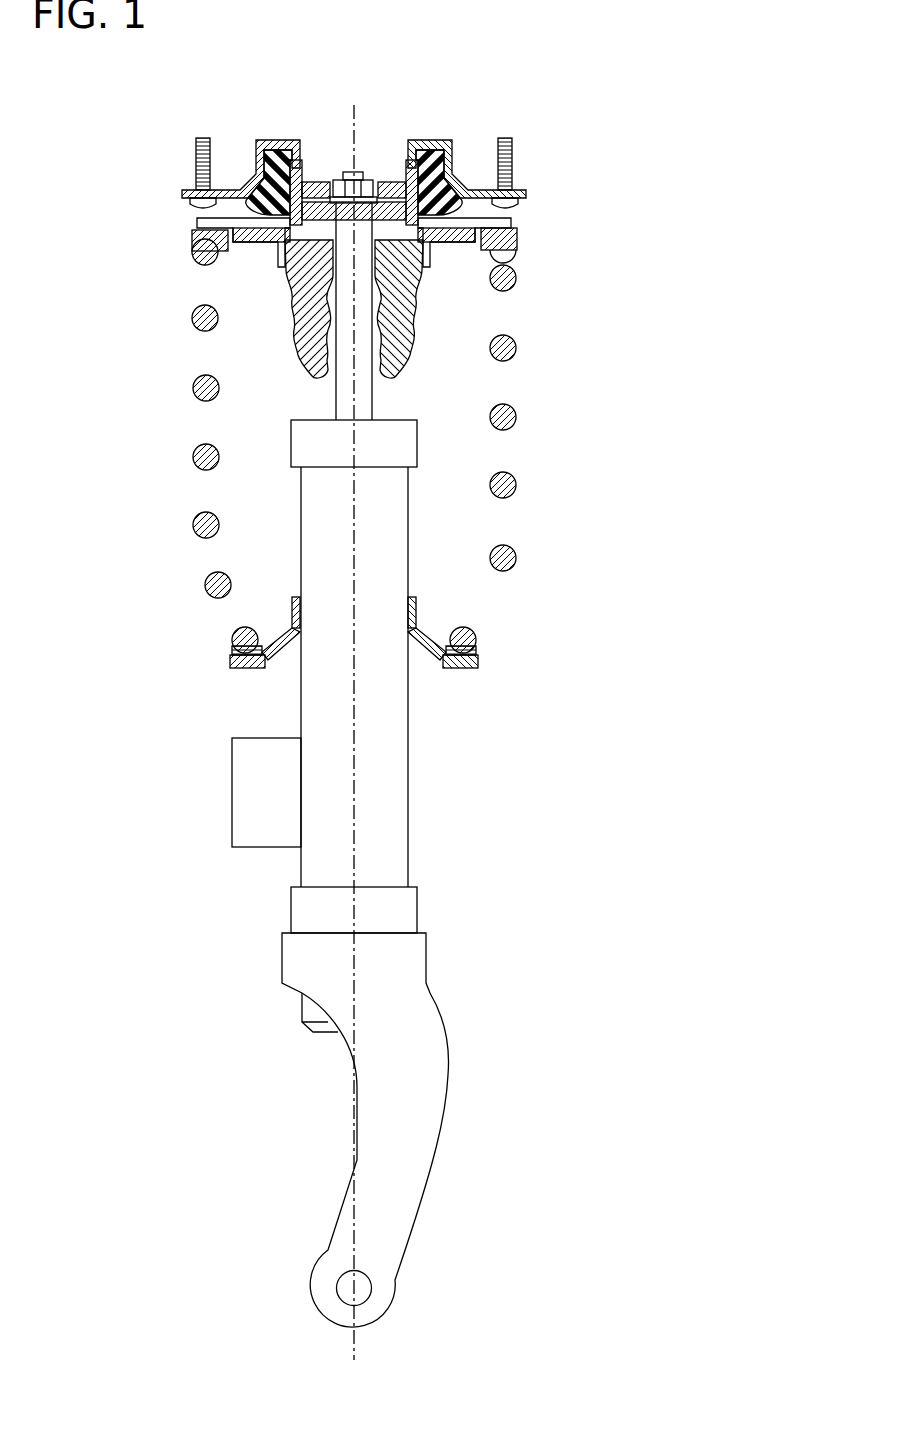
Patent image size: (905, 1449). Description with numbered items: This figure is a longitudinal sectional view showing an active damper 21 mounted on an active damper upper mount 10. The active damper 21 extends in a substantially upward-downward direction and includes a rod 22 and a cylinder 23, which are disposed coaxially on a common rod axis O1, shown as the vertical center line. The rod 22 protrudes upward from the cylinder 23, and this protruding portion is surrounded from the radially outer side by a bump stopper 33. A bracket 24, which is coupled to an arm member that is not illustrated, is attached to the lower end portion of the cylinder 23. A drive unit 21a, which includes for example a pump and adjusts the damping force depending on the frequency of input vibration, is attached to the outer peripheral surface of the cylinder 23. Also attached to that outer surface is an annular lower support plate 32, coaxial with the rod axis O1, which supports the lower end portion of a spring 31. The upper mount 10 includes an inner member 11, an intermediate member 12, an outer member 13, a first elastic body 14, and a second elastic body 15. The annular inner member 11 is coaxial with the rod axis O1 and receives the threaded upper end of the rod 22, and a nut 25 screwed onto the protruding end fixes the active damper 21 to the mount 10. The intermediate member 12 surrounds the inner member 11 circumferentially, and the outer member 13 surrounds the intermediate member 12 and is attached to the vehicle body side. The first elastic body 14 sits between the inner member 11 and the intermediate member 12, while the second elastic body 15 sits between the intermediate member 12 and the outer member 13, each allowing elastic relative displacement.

The active damper upper mount 10 is at (374, 691).
The rod axis O1 is at (356, 108).
The inner member 11 is at (318, 207).
The intermediate member 12 is at (430, 262).
The outer member 13 is at (527, 183).
The first elastic body 14 is at (300, 212).
The second elastic body 15 is at (265, 187).
The active damper 21 is at (290, 722).
The drive unit 21a is at (232, 792).
The rod 22 is at (374, 398).
The cylinder 23 is at (408, 782).
The bracket 24 is at (448, 1067).
The nut 25 is at (363, 178).
The spring 31 is at (517, 483).
The lower support plate 32 is at (463, 668).
The bump stopper 33 is at (410, 330).